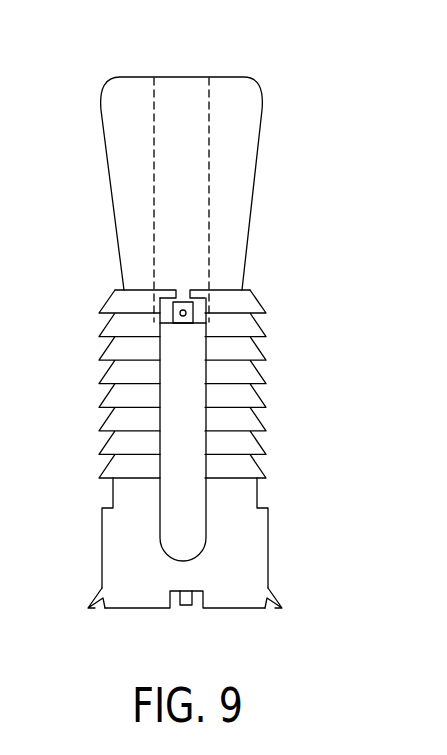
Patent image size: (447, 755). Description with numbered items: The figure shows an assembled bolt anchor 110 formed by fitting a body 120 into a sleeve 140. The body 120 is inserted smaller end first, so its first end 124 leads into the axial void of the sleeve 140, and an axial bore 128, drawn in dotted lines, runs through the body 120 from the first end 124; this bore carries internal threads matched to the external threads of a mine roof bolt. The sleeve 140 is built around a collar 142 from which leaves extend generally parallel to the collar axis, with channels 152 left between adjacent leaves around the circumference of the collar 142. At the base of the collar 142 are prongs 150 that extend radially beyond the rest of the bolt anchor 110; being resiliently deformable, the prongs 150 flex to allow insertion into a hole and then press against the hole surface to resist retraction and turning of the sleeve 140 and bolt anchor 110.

The bolt anchor 110 is at (342, 233).
The body 120 is at (268, 238).
The first end 124 is at (257, 80).
The axial bore 128 is at (209, 76).
The sleeve 140 is at (285, 348).
The collar 142 is at (102, 545).
The prongs 150 is at (187, 607).
The channels 152 is at (180, 465).